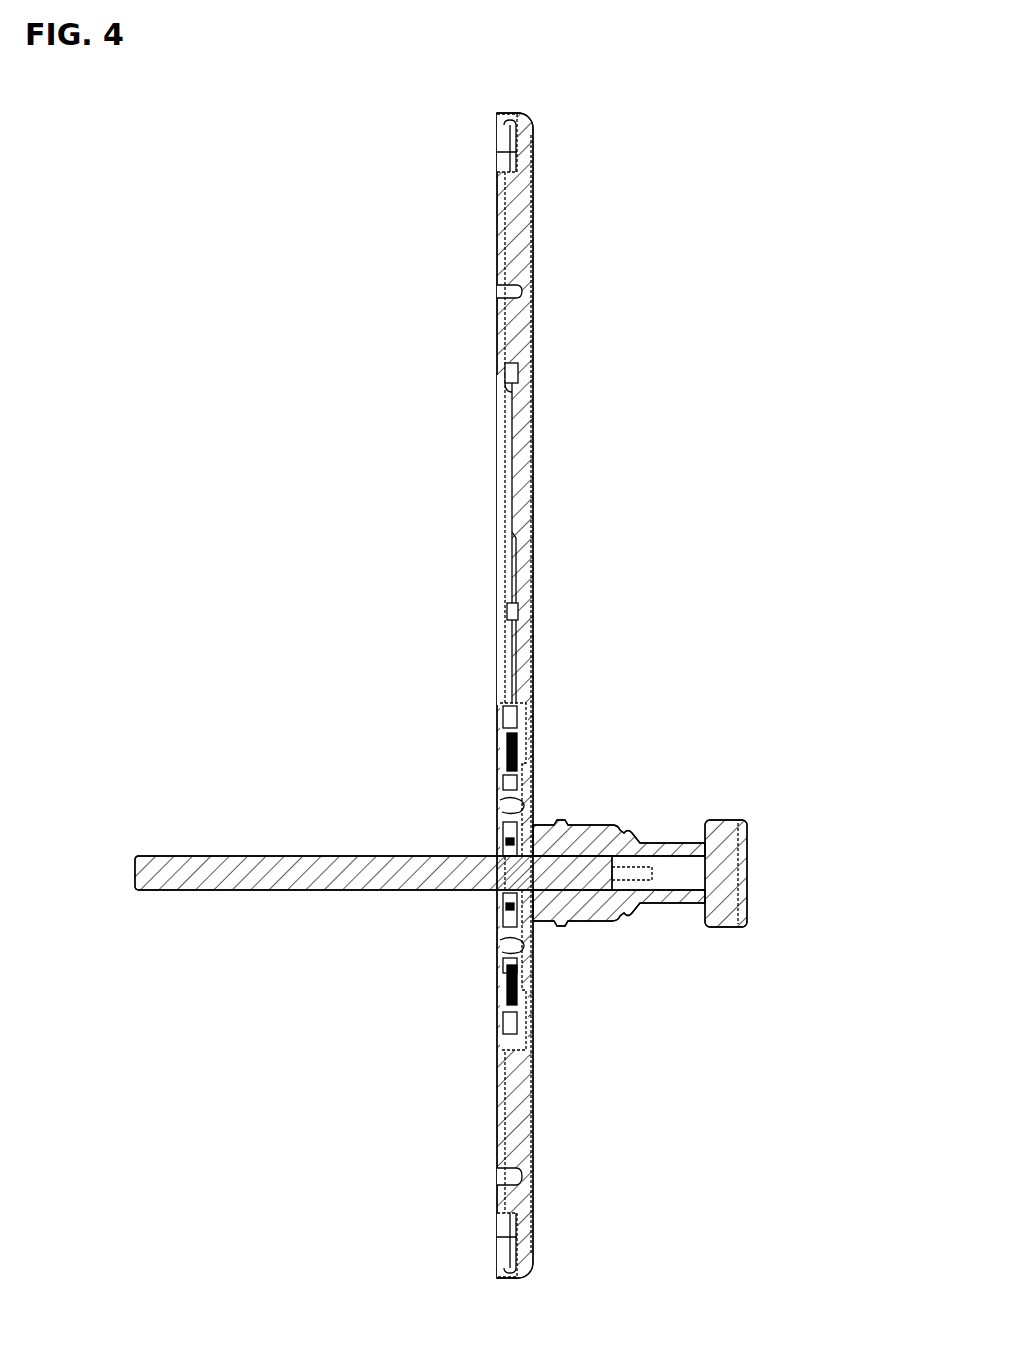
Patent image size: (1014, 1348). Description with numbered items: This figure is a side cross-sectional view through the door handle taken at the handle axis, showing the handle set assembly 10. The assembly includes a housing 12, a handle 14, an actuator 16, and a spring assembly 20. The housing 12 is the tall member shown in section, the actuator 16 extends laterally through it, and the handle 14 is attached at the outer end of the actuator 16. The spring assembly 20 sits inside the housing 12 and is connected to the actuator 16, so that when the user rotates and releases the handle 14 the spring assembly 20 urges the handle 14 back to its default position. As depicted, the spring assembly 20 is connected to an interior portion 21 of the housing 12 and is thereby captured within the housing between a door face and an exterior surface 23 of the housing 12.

The handle set assembly 10 is at (730, 253).
The housing 12 is at (533, 438).
The handle 14 is at (728, 820).
The actuator 16 is at (245, 855).
The spring assembly 20 is at (500, 743).
The interior portion 21 is at (497, 595).
The exterior surface 23 is at (532, 559).